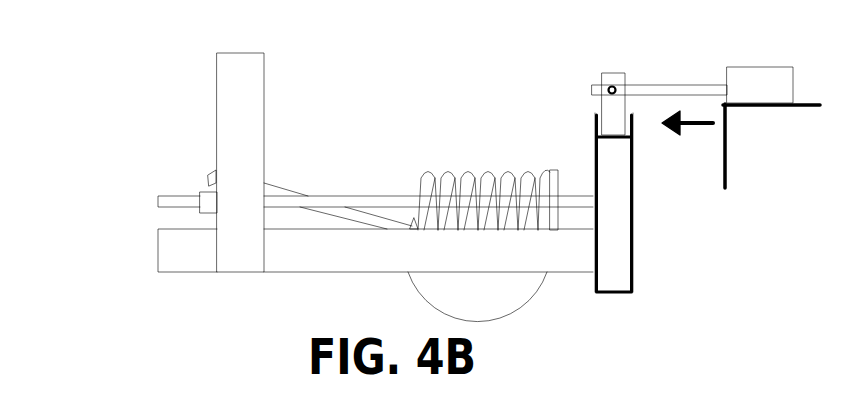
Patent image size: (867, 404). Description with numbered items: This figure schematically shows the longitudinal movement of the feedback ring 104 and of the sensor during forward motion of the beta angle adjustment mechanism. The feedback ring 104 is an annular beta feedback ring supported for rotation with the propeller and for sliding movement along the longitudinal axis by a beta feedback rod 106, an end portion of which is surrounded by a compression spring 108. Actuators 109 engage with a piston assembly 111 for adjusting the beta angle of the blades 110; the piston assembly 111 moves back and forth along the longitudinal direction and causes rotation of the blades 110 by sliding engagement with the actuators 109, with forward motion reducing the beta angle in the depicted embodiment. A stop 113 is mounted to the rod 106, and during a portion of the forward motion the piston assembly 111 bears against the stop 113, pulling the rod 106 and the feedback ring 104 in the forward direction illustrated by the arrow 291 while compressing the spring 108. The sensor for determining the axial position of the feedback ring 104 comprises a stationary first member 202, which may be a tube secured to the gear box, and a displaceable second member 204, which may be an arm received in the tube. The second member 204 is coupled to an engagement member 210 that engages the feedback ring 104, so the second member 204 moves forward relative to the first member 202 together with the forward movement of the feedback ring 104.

The feedback ring 104 is at (613, 180).
The beta feedback rod 106 is at (362, 198).
The compression spring 108 is at (488, 178).
The actuator 109 is at (319, 172).
The blade 110 is at (508, 305).
The piston assembly 111 is at (240, 282).
The stop 113 is at (207, 198).
The first member 202 is at (770, 70).
The second member 204 is at (687, 82).
The engagement member 210 is at (605, 80).
The arrow 291 is at (705, 125).